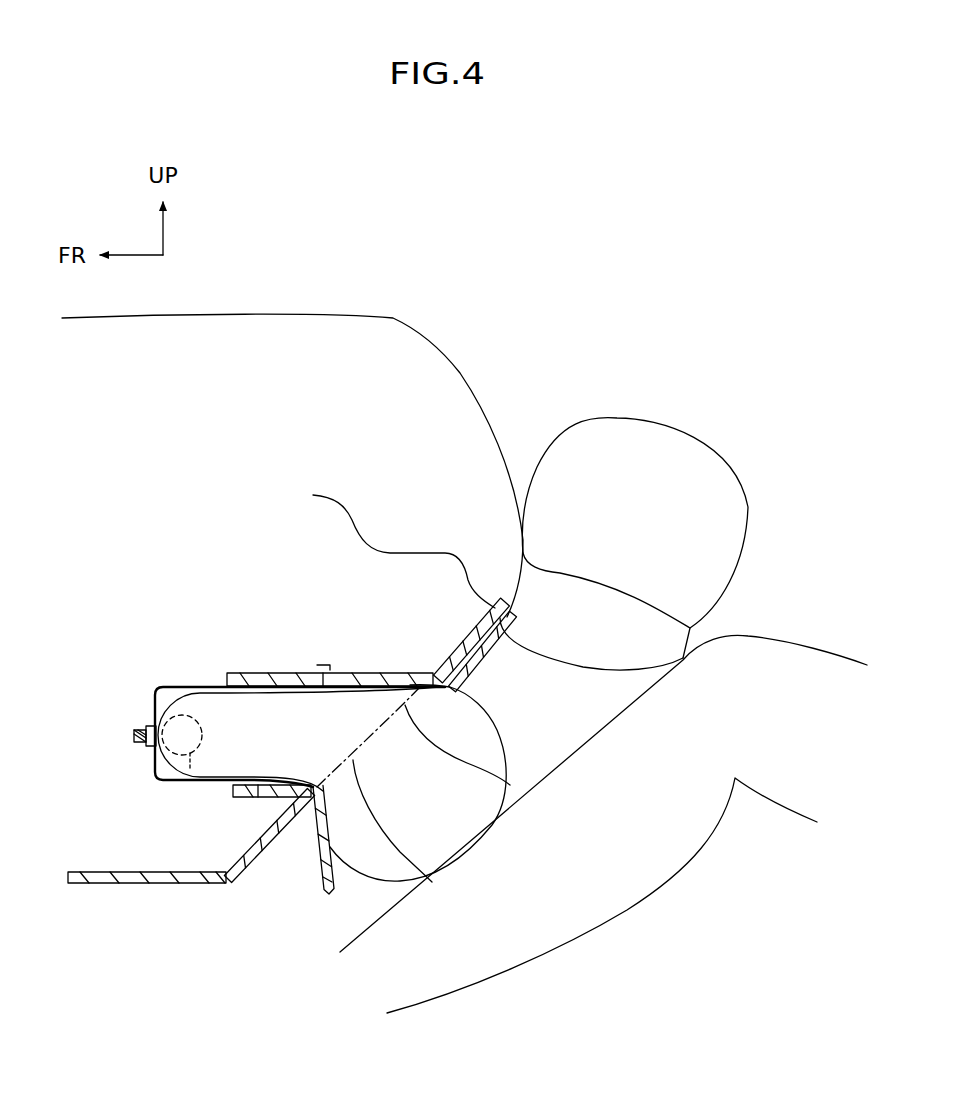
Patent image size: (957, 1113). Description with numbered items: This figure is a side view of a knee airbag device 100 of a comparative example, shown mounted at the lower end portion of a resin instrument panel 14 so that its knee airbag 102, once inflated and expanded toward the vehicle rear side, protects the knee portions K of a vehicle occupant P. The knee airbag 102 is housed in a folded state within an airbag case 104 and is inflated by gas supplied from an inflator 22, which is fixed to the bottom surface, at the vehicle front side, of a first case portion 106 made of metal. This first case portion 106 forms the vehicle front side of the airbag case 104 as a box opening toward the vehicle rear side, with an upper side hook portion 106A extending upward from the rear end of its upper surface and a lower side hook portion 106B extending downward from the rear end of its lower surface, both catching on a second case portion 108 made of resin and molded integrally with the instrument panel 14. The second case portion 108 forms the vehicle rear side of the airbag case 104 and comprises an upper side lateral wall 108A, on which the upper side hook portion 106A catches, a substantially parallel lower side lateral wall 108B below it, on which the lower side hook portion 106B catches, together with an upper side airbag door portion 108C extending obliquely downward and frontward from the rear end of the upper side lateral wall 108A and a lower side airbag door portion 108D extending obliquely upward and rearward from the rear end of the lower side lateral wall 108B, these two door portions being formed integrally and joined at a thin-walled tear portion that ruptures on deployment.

The instrument panel 14 is at (394, 310).
The knee airbag 102 is at (661, 418).
The knee portions K is at (643, 667).
The vehicle occupant P is at (789, 641).
The knee airbag device 100 is at (119, 657).
The airbag case 104 is at (193, 684).
The first case portion 106 is at (289, 739).
The upper side hook portion 106A is at (322, 666).
The lower side hook portion 106B is at (250, 798).
The second case portion 108 is at (364, 666).
The upper side lateral wall 108A is at (253, 670).
The lower side lateral wall 108B is at (283, 810).
The upper side airbag door portion 108C is at (497, 635).
The lower side airbag door portion 108D is at (327, 882).
The inflator 22 is at (185, 776).